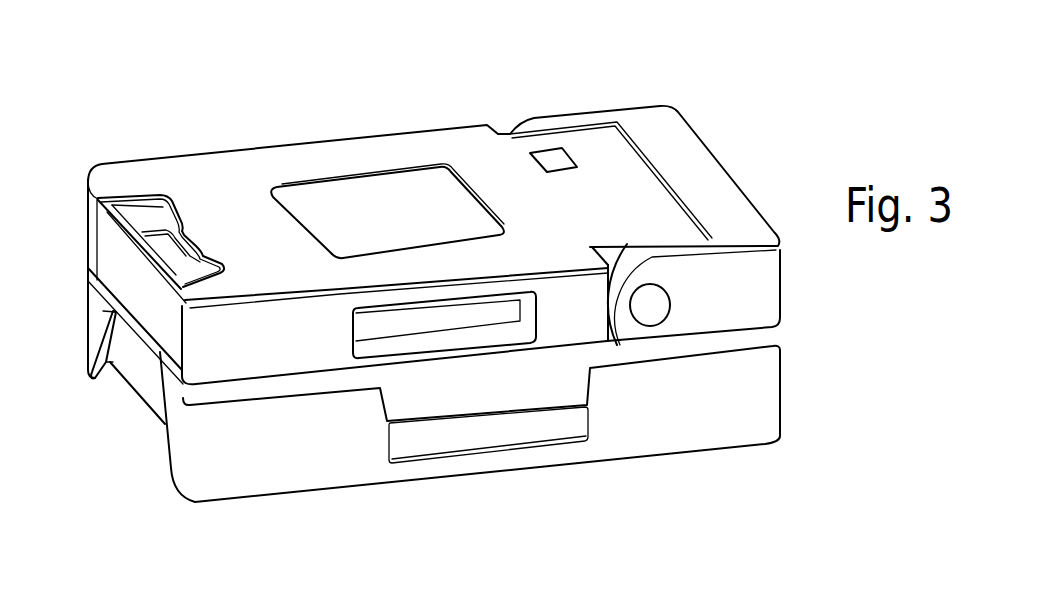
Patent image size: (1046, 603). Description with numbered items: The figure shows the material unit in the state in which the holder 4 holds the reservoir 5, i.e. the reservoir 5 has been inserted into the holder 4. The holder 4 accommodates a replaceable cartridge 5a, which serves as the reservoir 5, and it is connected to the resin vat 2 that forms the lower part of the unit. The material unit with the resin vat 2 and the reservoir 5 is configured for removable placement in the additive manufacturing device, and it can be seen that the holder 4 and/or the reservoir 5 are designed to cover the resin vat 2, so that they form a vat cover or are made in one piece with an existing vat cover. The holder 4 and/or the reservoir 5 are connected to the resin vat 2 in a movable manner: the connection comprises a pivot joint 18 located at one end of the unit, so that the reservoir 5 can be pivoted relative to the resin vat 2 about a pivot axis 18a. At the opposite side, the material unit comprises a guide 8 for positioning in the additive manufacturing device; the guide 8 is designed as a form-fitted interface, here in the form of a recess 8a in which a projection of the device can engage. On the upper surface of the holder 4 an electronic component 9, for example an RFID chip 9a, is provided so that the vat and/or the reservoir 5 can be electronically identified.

The resin vat 2 is at (728, 394).
The holder 4 is at (221, 201).
The reservoir 5 is at (387, 165).
The replaceable cartridge 5a is at (385, 210).
The guide 8 is at (113, 399).
The recess 8a is at (108, 365).
The electronic component 9 is at (560, 107).
The RFID chip 9a is at (550, 158).
The pivot joint 18 is at (772, 310).
The pivot axis 18a is at (652, 308).